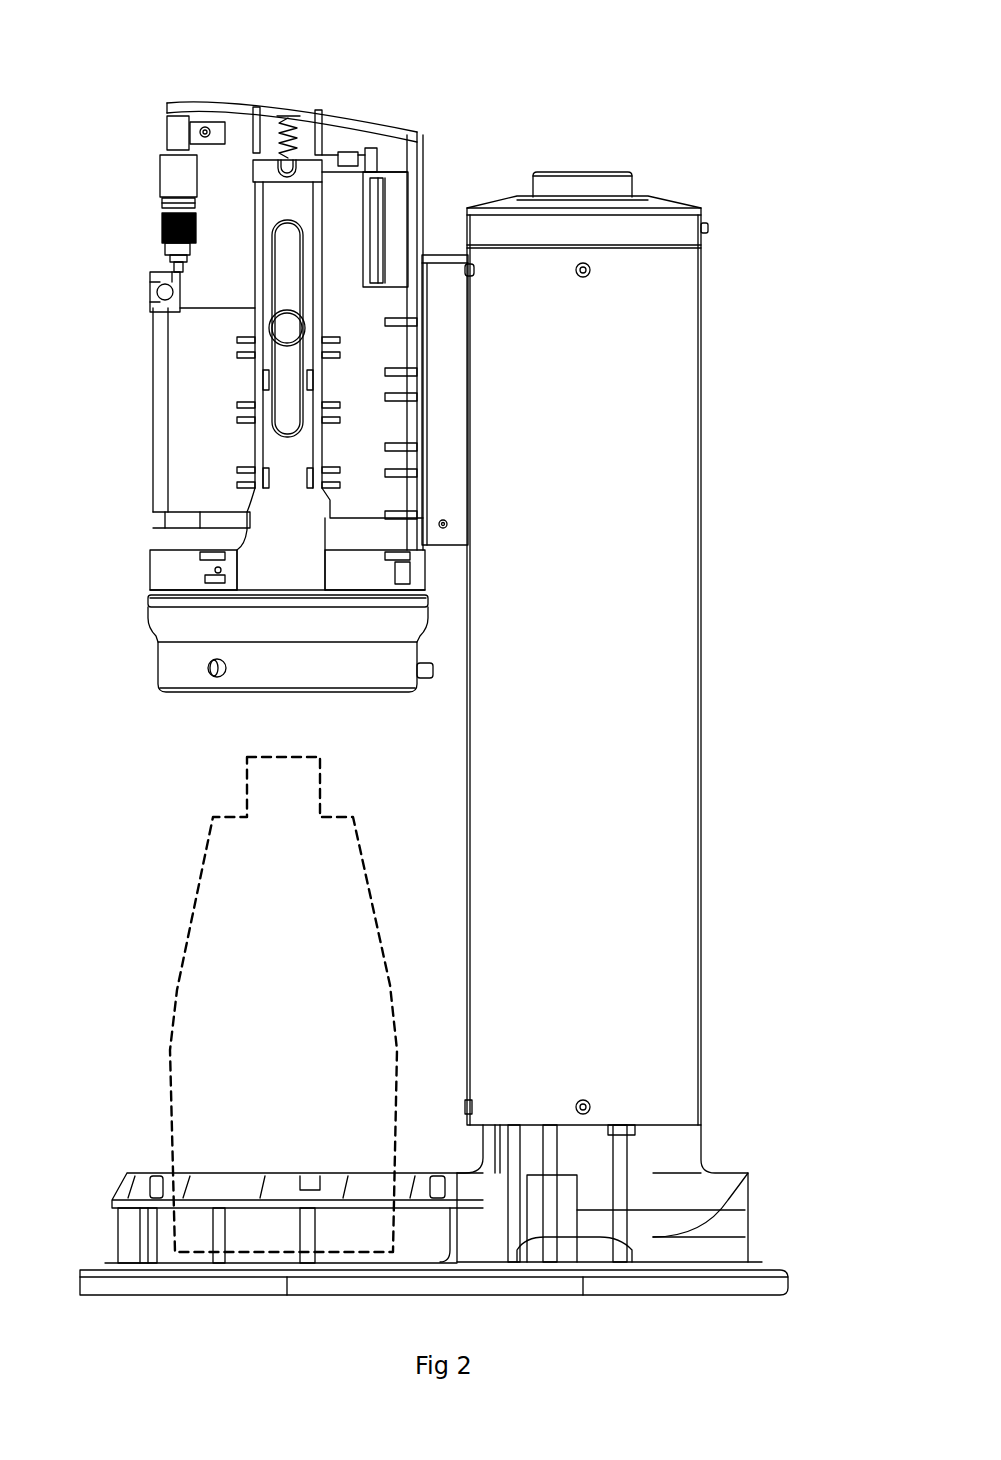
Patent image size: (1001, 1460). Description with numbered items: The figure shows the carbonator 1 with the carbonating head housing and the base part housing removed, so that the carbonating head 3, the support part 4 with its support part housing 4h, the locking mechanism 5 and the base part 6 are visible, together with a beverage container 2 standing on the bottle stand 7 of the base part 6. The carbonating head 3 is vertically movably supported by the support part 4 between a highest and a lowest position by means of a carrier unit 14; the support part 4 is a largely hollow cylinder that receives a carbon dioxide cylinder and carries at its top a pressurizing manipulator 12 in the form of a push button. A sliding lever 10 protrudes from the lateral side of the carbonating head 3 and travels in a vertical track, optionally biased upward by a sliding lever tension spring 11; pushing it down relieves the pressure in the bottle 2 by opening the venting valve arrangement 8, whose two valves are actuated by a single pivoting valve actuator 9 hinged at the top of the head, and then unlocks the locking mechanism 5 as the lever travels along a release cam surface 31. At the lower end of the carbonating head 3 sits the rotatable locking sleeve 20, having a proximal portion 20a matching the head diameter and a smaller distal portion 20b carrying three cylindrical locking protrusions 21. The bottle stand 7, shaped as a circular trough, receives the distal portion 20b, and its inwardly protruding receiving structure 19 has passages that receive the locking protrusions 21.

The carbonator 1 is at (92, 36).
The beverage container 2 is at (373, 895).
The carbonating head 3 is at (190, 438).
The support part 4 is at (649, 596).
The support part housing 4h is at (609, 682).
The locking mechanism 5 is at (78, 1176).
The base part 6 is at (775, 1283).
The bottle stand 7 is at (148, 1165).
The venting valve arrangement 8 is at (160, 228).
The pivoting valve actuator 9 is at (345, 135).
The sliding lever 10 is at (287, 328).
The sliding lever tension spring 11 is at (283, 140).
The pressurizing manipulator 12 is at (580, 187).
The carrier unit 14 is at (442, 248).
The receiving structure 19 is at (434, 1165).
The locking sleeve 20 is at (130, 633).
The proximal portion 20a is at (172, 610).
The distal portion 20b is at (175, 670).
The locking protrusions 21 is at (426, 680).
The release cam surface 31 is at (218, 537).